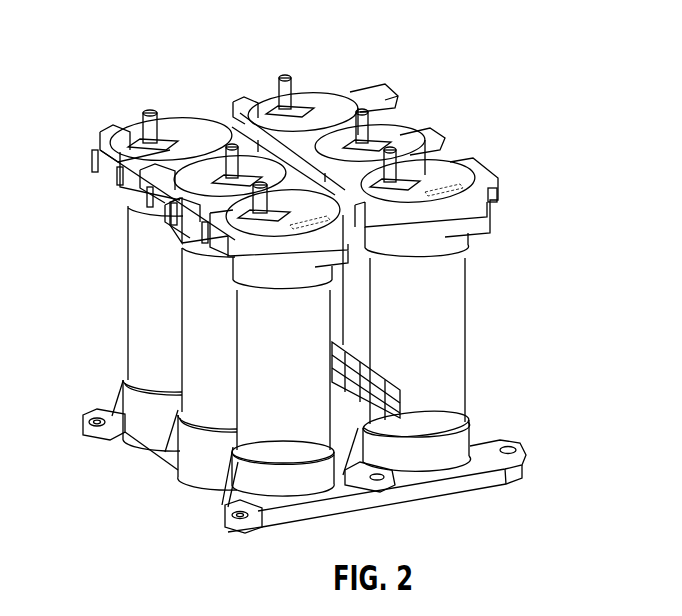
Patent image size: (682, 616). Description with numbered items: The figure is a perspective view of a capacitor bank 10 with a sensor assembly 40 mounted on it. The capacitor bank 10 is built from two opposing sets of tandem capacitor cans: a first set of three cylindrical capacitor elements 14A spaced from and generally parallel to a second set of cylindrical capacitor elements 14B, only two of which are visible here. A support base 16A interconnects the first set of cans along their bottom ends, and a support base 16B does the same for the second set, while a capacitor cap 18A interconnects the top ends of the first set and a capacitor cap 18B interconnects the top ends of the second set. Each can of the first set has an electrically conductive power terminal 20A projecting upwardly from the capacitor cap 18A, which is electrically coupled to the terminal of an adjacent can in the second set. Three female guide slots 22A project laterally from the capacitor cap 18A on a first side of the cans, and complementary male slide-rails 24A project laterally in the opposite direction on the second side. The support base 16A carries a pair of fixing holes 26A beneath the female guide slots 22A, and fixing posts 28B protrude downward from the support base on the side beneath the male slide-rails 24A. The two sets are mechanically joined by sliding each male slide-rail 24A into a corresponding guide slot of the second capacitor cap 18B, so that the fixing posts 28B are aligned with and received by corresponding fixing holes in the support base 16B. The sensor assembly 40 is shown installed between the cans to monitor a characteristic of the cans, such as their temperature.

The capacitor bank 10 is at (528, 81).
The cylindrical capacitor elements 14A is at (148, 295).
The cylindrical capacitor elements 14B is at (358, 302).
The support base 16A is at (197, 452).
The support base 16B is at (457, 435).
The capacitor cap 18A is at (182, 128).
The capacitor cap 18B is at (322, 96).
The power terminal 20A is at (138, 128).
The female guide slots 22A is at (115, 163).
The male slide-rails 24A is at (232, 128).
The fixing holes 26A is at (96, 418).
The fixing posts 28B is at (518, 465).
The sensor assembly 40 is at (384, 364).